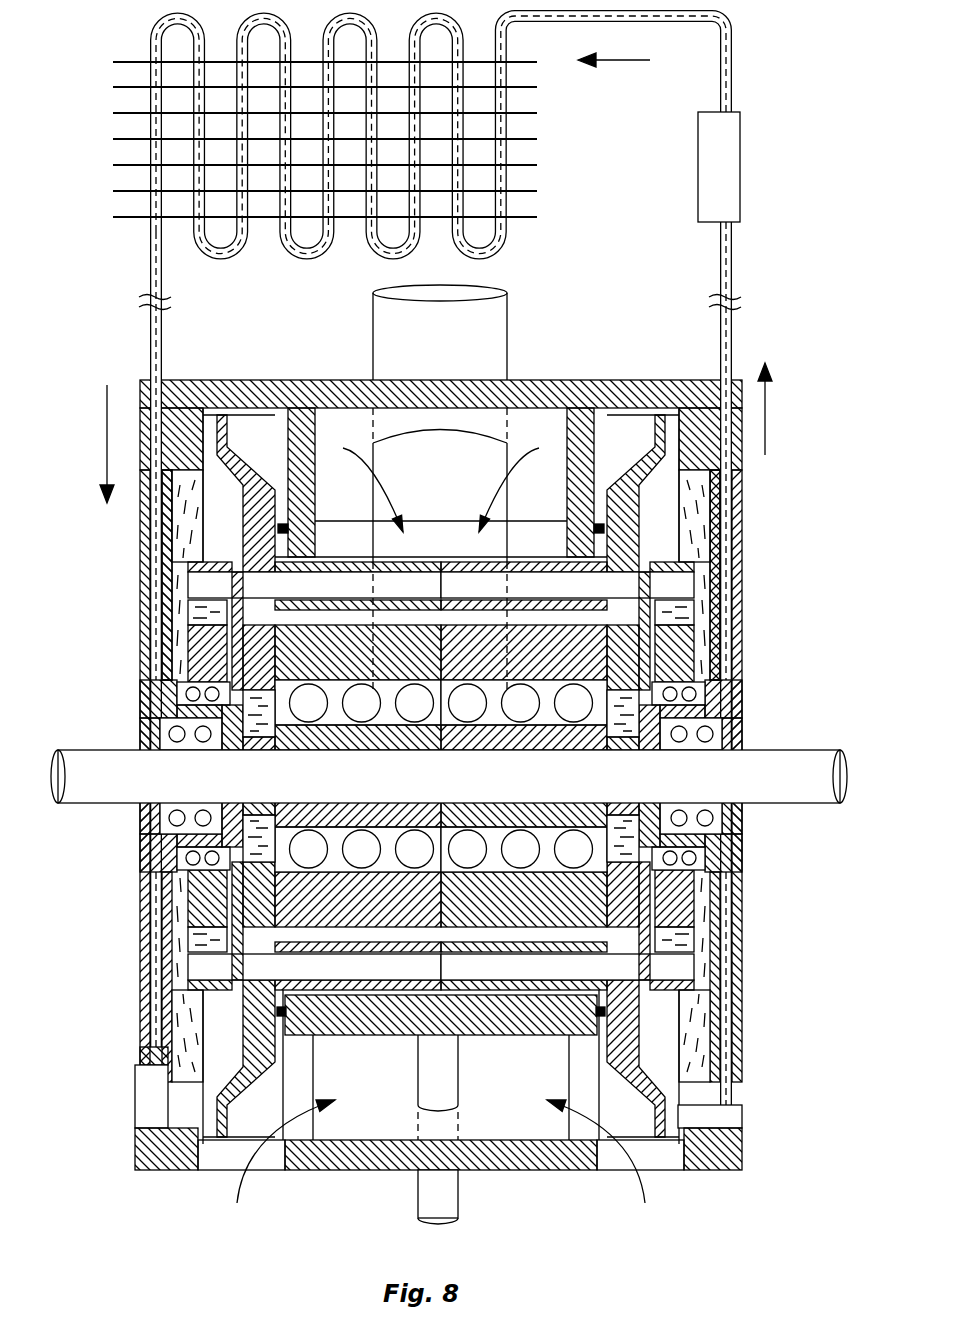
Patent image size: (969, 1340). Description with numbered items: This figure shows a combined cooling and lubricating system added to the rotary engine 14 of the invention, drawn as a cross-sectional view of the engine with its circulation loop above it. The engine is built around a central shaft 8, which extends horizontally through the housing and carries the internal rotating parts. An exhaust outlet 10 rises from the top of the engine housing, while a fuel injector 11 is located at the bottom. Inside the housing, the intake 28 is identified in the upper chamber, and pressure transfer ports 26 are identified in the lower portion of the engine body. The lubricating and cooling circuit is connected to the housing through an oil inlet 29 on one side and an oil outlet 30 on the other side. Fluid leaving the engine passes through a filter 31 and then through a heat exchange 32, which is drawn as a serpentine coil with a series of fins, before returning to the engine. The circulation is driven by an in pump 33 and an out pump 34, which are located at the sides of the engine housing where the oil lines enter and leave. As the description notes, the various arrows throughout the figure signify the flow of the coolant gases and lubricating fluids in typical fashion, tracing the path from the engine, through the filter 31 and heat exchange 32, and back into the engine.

The shaft 8 is at (796, 758).
The exhaust outlet 10 is at (446, 353).
The fuel injector 11 is at (413, 1185).
The rotary engine 14 is at (434, 712).
The pressure transfer ports 26 is at (576, 853).
The intake 28 is at (522, 425).
The oil inlet 29 is at (150, 270).
The oil outlet 30 is at (735, 270).
The filter 31 is at (741, 172).
The heat exchange 32 is at (506, 123).
The in pump 33 is at (165, 648).
The out pump 34 is at (720, 647).